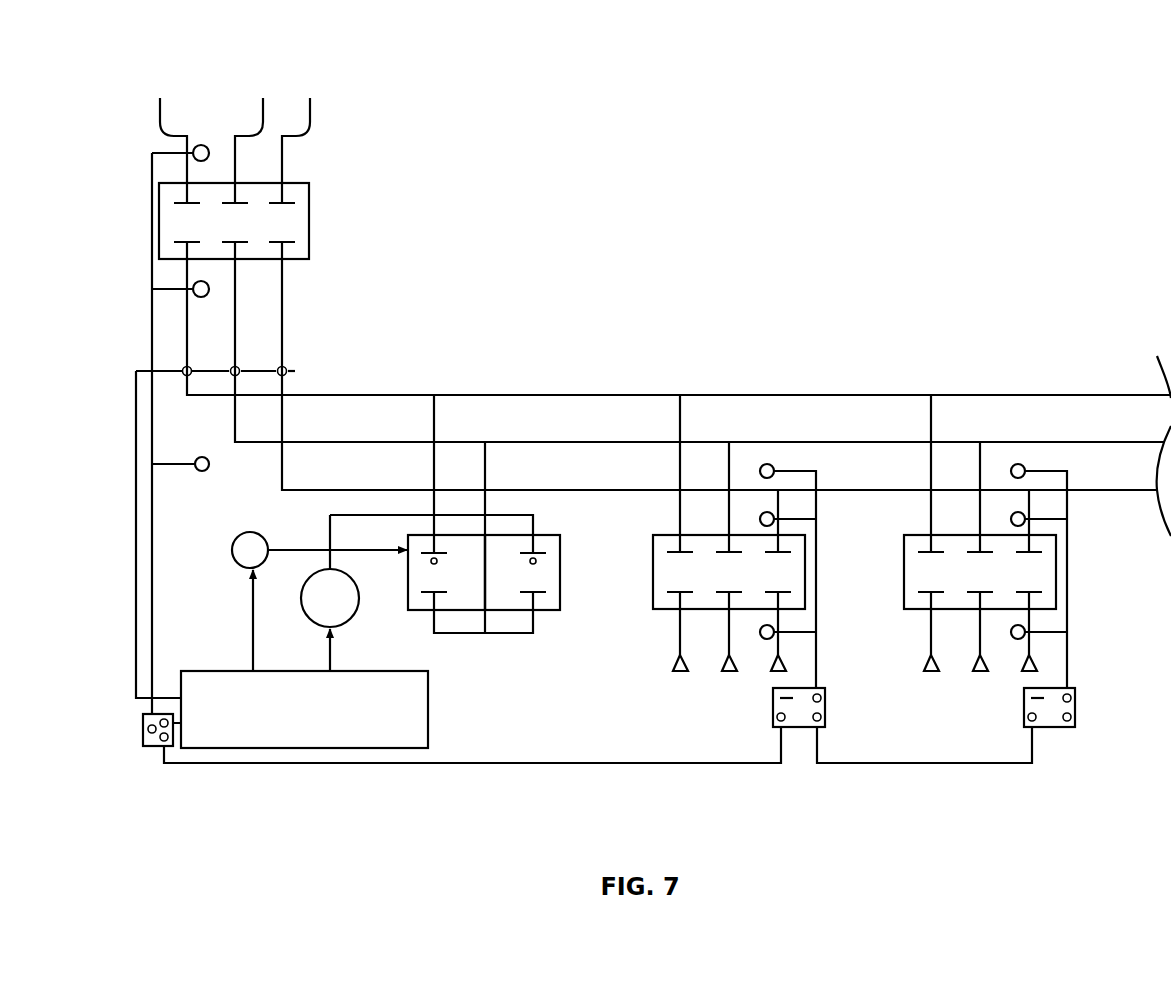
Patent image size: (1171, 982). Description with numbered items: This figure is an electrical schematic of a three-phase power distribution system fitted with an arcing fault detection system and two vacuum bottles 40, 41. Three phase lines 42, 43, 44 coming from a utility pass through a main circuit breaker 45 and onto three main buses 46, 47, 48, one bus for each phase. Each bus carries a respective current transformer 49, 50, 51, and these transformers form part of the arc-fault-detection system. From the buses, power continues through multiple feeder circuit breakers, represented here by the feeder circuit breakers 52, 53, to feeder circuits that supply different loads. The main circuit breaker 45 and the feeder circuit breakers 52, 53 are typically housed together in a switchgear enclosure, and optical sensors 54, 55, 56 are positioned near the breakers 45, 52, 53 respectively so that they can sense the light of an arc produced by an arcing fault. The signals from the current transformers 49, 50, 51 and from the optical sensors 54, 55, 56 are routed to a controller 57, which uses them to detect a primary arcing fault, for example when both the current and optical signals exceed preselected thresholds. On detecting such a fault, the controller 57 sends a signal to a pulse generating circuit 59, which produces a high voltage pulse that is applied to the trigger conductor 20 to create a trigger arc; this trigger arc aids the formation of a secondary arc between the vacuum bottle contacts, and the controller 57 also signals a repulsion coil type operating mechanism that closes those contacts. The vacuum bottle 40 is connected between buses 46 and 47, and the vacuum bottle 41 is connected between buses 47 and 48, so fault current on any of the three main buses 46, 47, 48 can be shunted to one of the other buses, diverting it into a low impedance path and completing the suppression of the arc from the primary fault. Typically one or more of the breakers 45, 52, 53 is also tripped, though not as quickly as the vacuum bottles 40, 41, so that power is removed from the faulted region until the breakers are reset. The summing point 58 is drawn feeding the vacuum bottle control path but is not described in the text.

The trigger conductor 20 is at (357, 513).
The vacuum bottle 40 is at (452, 633).
The vacuum bottle 41 is at (517, 633).
The phase line 42 is at (164, 124).
The phase line 43 is at (256, 124).
The phase line 44 is at (303, 124).
The main circuit breaker 45 is at (309, 197).
The main bus 46 is at (512, 394).
The main bus 47 is at (561, 441).
The main bus 48 is at (606, 489).
The current transformer 49 is at (185, 366).
The current transformer 50 is at (236, 365).
The current transformer 51 is at (284, 365).
The feeder circuit breaker 52 is at (653, 588).
The feeder circuit breaker 53 is at (904, 588).
The optical sensor 54 is at (207, 145).
The optical sensor 55 is at (762, 513).
The optical sensor 56 is at (1012, 513).
The controller 57 is at (363, 748).
The summing junction 58 is at (233, 540).
The pulse generating circuit 59 is at (303, 613).